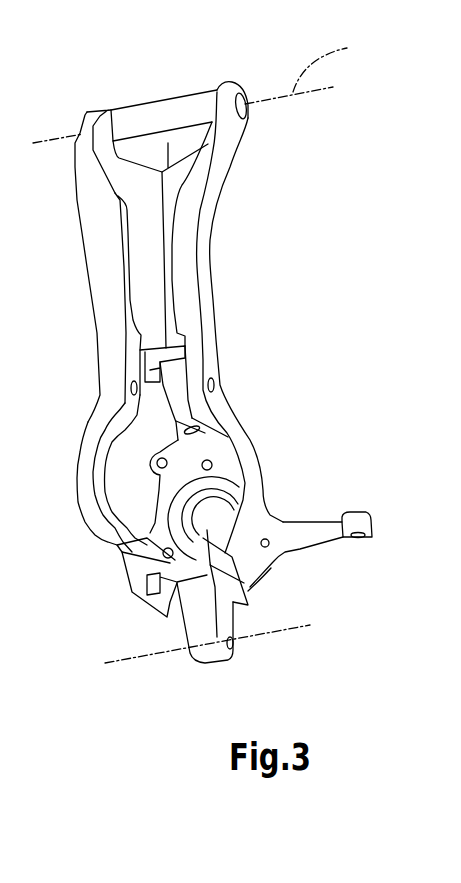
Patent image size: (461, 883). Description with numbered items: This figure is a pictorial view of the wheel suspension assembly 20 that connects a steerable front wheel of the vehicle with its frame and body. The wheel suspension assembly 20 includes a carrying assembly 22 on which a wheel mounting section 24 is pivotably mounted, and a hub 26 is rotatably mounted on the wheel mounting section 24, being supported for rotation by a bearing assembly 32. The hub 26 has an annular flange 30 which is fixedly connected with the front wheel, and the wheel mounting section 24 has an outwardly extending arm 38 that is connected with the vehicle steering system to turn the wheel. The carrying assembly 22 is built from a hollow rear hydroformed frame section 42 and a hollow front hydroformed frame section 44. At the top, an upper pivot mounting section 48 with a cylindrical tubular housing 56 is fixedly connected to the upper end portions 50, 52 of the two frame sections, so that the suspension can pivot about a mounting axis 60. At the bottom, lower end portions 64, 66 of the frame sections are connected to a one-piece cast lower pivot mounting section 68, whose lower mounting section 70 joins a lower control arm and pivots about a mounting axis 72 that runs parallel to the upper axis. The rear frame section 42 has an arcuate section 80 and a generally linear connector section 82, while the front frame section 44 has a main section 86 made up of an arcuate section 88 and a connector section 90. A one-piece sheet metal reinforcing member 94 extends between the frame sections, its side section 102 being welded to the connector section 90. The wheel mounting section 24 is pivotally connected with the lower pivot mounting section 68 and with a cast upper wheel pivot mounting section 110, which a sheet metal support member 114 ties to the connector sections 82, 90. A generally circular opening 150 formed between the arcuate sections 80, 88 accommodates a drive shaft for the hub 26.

The wheel suspension assembly 20 is at (240, 72).
The carrying assembly 22 is at (245, 213).
The wheel mounting section 24 is at (165, 532).
The hub 26 is at (267, 472).
The annular flange 30 is at (272, 570).
The bearing assembly 32 is at (212, 500).
The outwardly extending arm 38 is at (358, 520).
The rear hydroformed frame section 42 is at (213, 300).
The front hydroformed frame section 44 is at (112, 322).
The upper pivot mounting section 48 is at (192, 95).
The upper end portion of rear frame section 50 is at (218, 145).
The upper end portion of front frame section 52 is at (97, 127).
The cylindrical tubular housing 56 is at (162, 115).
The mounting axis 60 is at (202, 89).
The lower end portion of rear frame section 64 is at (248, 605).
The lower end portion of front frame section 66 is at (133, 578).
The lower pivot mounting section 68 is at (207, 665).
The lower mounting section 70 is at (237, 653).
The mounting axis 72 is at (122, 665).
The arcuate section 80 is at (250, 495).
The connector section 82 is at (190, 267).
The main section 86 is at (77, 483).
The arcuate section 88 is at (90, 453).
The connector section 90 is at (107, 227).
The reinforcing member 94 is at (153, 205).
The side section 102 is at (150, 251).
The upper wheel pivot mounting section 110 is at (180, 388).
The support member 114 is at (150, 370).
The circular opening 150 is at (140, 487).